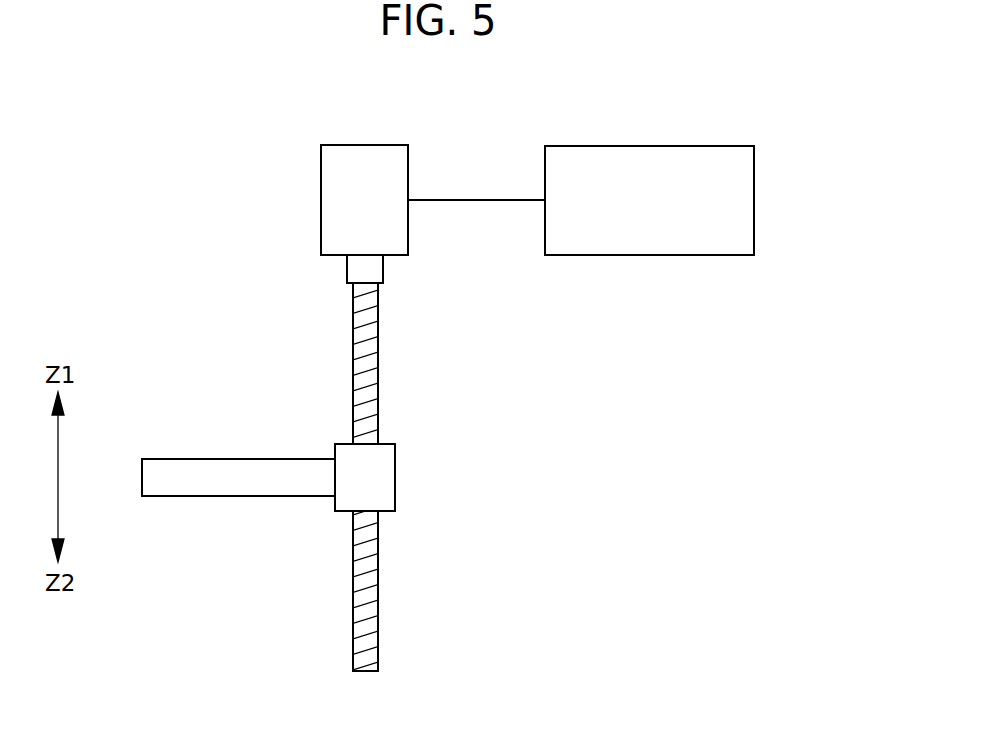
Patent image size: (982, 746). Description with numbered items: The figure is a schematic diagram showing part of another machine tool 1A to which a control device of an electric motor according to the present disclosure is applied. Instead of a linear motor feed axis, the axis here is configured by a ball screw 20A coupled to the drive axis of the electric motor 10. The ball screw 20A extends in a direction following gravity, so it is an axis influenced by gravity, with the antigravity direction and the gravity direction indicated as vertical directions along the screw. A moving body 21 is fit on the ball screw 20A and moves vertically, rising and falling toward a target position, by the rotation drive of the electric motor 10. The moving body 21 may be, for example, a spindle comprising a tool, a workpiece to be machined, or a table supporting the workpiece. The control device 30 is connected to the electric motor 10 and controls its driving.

The machine tool 1A is at (502, 103).
The electric motor 10 is at (321, 201).
The ball screw 20A is at (379, 365).
The moving body 21 is at (238, 497).
The control device 30 is at (754, 200).